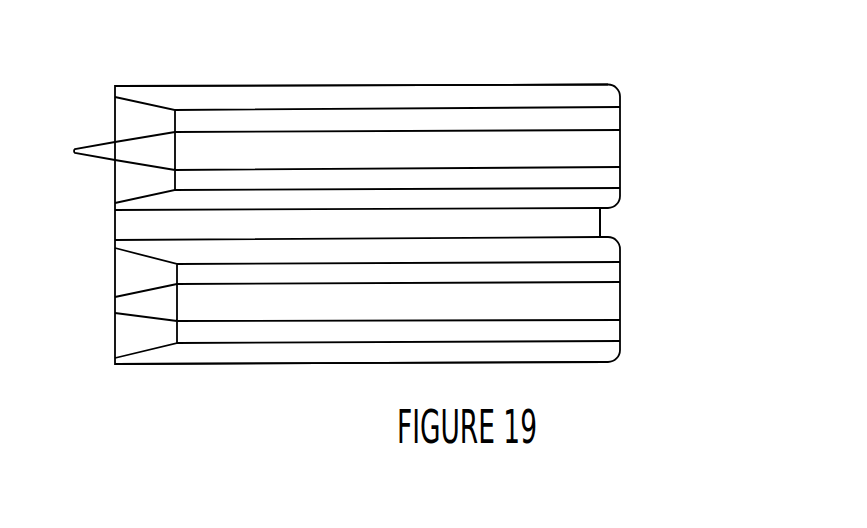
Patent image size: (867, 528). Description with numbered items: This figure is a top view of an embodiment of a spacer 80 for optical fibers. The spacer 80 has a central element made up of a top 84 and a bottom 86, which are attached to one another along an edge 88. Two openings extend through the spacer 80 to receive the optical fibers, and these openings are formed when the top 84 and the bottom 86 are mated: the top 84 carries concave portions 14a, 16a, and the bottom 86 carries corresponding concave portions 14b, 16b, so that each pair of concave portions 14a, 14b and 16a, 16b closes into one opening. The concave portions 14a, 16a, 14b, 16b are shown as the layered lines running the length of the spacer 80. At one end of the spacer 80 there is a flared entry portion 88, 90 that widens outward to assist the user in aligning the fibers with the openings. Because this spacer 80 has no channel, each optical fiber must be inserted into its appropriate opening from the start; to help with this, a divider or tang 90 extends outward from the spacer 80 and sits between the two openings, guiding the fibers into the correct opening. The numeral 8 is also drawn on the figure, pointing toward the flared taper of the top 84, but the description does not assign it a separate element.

The tapered wedge portion 8 is at (140, 101).
The spacer 80 is at (481, 52).
The top 84 is at (293, 86).
The bottom 86 is at (292, 355).
The edge 88 is at (600, 222).
The divider or tang 90 is at (100, 154).
The concave portion 14a is at (606, 175).
The concave portion 14b is at (608, 268).
The concave portion 16a is at (605, 115).
The concave portion 16b is at (608, 328).